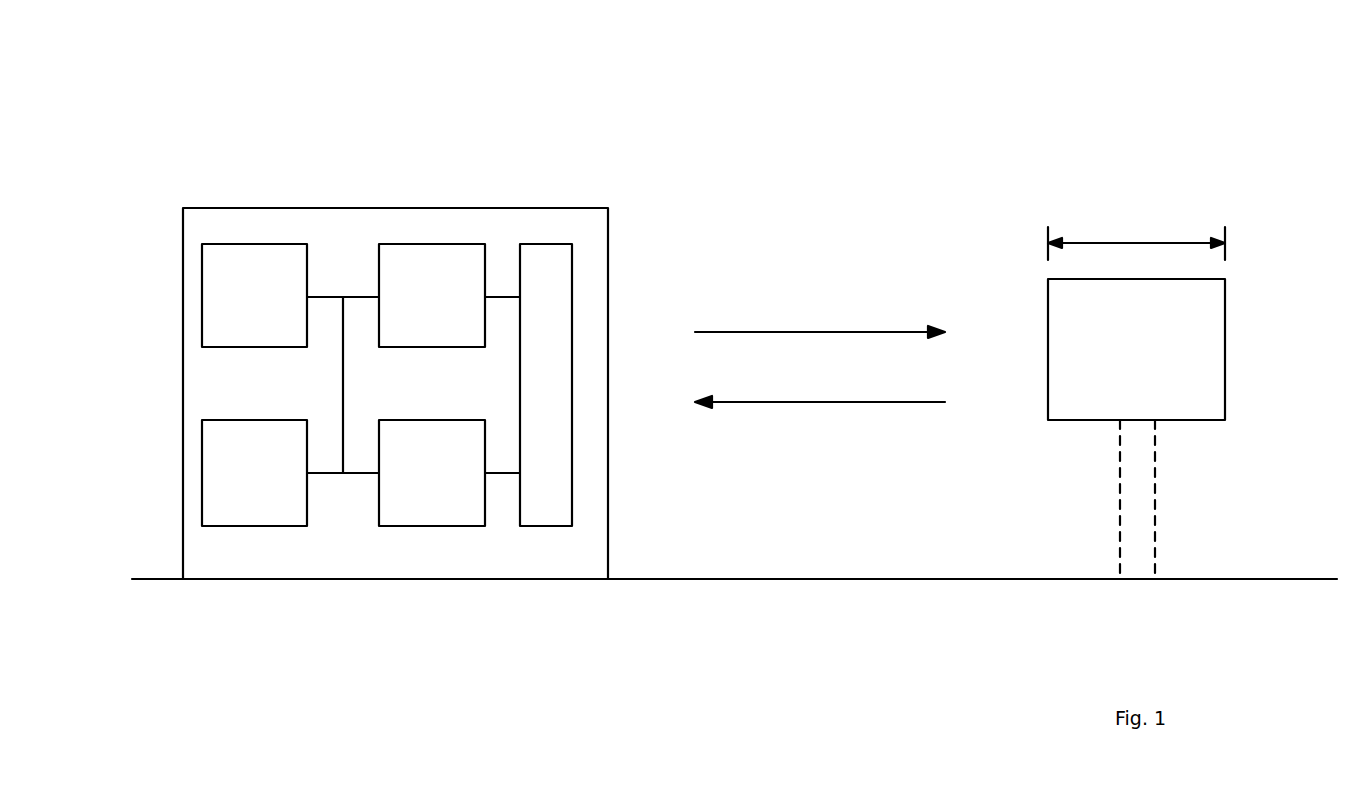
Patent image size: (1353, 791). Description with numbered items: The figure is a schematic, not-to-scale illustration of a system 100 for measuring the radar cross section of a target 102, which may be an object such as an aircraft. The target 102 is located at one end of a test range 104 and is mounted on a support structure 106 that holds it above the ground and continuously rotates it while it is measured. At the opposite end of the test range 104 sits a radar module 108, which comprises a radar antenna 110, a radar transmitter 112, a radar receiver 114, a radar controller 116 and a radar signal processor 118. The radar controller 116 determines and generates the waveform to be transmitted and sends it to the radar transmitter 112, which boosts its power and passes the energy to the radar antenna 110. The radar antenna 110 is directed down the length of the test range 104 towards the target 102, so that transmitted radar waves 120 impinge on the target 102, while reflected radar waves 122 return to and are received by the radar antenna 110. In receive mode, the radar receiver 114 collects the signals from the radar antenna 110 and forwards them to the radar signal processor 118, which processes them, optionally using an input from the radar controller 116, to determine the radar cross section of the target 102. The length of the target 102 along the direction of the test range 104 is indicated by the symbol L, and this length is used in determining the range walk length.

The system 100 is at (1028, 130).
The target 102 is at (1048, 297).
The test range 104 is at (783, 579).
The support structure 106 is at (1155, 490).
The radar module 108 is at (608, 240).
The radar antenna 110 is at (555, 244).
The radar transmitter 112 is at (430, 244).
The radar receiver 114 is at (436, 526).
The radar controller 116 is at (262, 244).
The radar signal processor 118 is at (257, 526).
The transmitted radar waves 120 is at (853, 332).
The reflected radar waves 122 is at (840, 402).
The length of the target L is at (1140, 243).